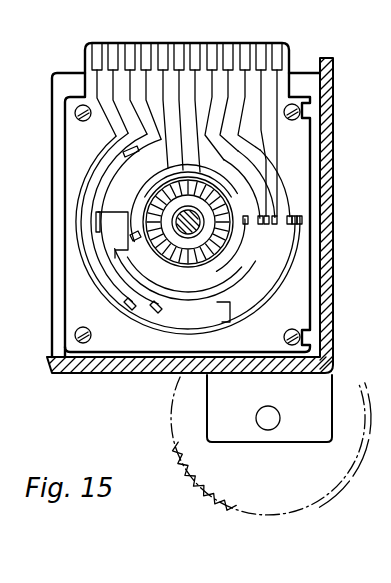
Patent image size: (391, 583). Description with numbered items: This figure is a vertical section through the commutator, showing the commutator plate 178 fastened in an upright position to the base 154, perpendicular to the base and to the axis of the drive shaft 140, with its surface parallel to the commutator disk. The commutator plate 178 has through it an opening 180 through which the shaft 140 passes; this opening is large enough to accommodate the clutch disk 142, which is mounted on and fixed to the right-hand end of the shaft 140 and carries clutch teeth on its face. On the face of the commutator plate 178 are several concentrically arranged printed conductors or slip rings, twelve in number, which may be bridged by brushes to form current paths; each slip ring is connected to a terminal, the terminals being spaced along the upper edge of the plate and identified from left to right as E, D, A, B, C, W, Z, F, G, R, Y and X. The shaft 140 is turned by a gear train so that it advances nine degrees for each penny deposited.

The commutator plate 178 is at (59, 74).
The opening 180 is at (150, 225).
The clutch disk 142 is at (158, 243).
The drive shaft 140 is at (188, 232).
The base 154 is at (130, 375).